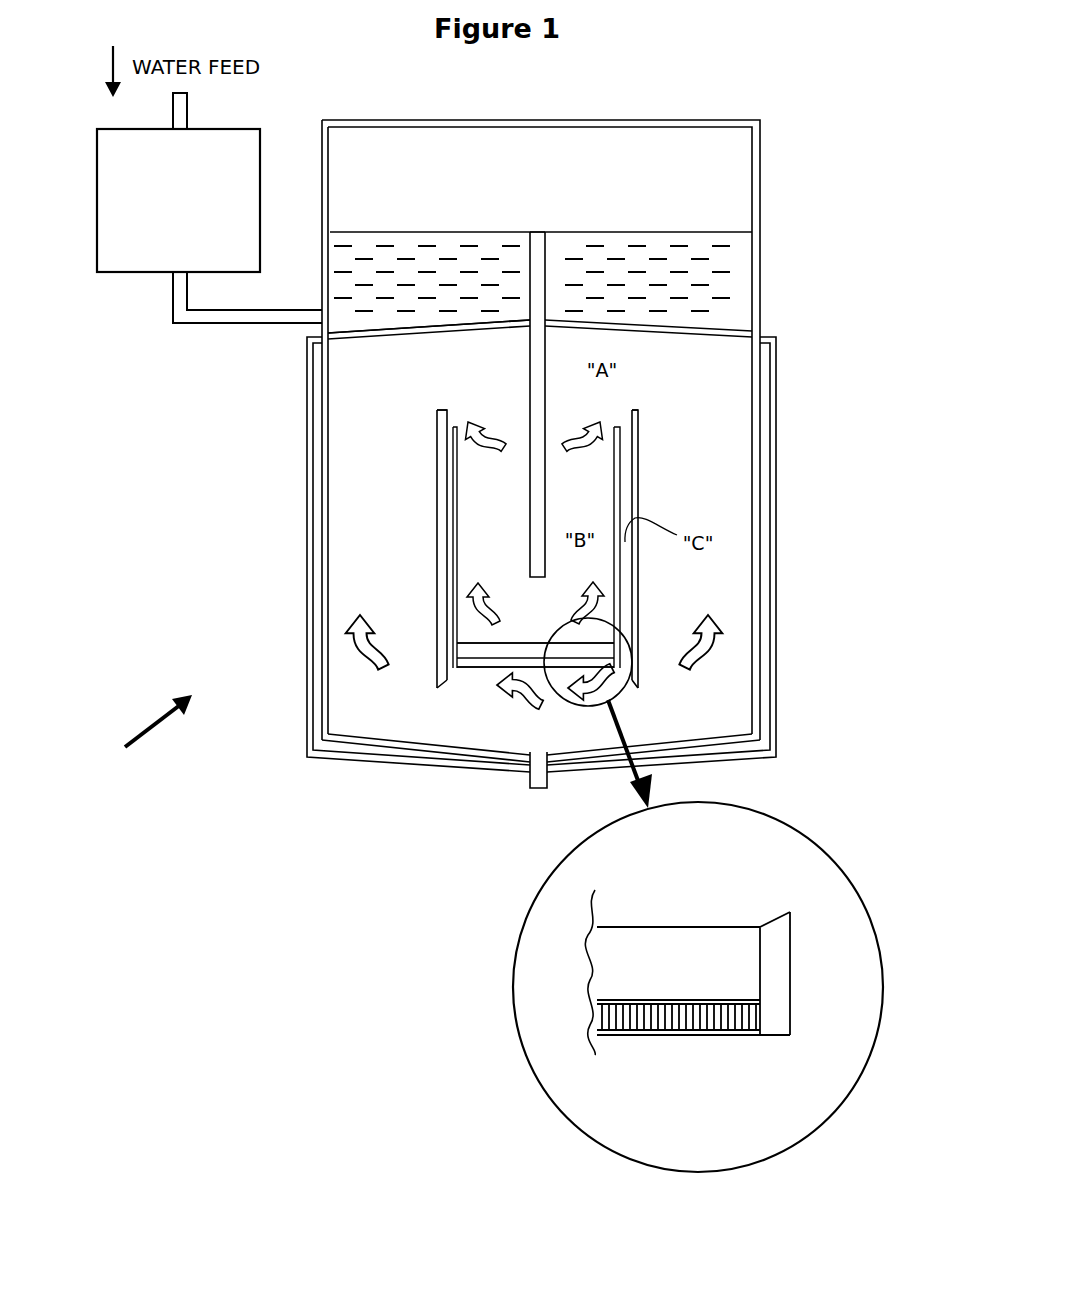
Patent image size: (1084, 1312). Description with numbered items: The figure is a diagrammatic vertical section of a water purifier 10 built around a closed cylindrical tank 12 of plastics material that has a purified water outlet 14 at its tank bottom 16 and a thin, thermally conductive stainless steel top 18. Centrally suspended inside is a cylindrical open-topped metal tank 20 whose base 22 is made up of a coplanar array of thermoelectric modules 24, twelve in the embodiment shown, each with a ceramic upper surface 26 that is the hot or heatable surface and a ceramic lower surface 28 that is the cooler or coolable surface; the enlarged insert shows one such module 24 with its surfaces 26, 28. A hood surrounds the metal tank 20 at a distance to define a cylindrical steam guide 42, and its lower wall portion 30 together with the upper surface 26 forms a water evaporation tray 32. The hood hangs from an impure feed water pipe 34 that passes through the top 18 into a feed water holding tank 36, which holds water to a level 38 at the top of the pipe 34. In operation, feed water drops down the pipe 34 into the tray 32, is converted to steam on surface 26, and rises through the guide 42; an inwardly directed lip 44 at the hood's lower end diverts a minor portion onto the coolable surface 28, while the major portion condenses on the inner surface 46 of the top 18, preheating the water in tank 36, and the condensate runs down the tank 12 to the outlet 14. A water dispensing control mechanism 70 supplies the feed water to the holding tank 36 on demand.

The water purifier 10 is at (146, 738).
The closed cylindrical tank 12 is at (772, 437).
The purified water outlet 14 is at (530, 776).
The tank bottom 16 is at (363, 757).
The thermally conductive stainless steel top 18 is at (716, 330).
The open-topped metal tank 20 is at (612, 516).
The base 22 is at (497, 687).
The thermoelectric modules 24 is at (520, 675).
The upper surface 26 is at (667, 1000).
The lower surface 28 is at (732, 1037).
The lower wall portion 30 is at (773, 953).
The water evaporation tray 32 is at (590, 650).
The impure feed water pipe 34 is at (518, 395).
The feed water holding tank 36 is at (762, 197).
The water level 38 is at (545, 232).
The steam guide 42 is at (445, 512).
The lip 44 is at (440, 688).
The inner surface 46 is at (378, 348).
The water dispensing control mechanism 70 is at (178, 325).